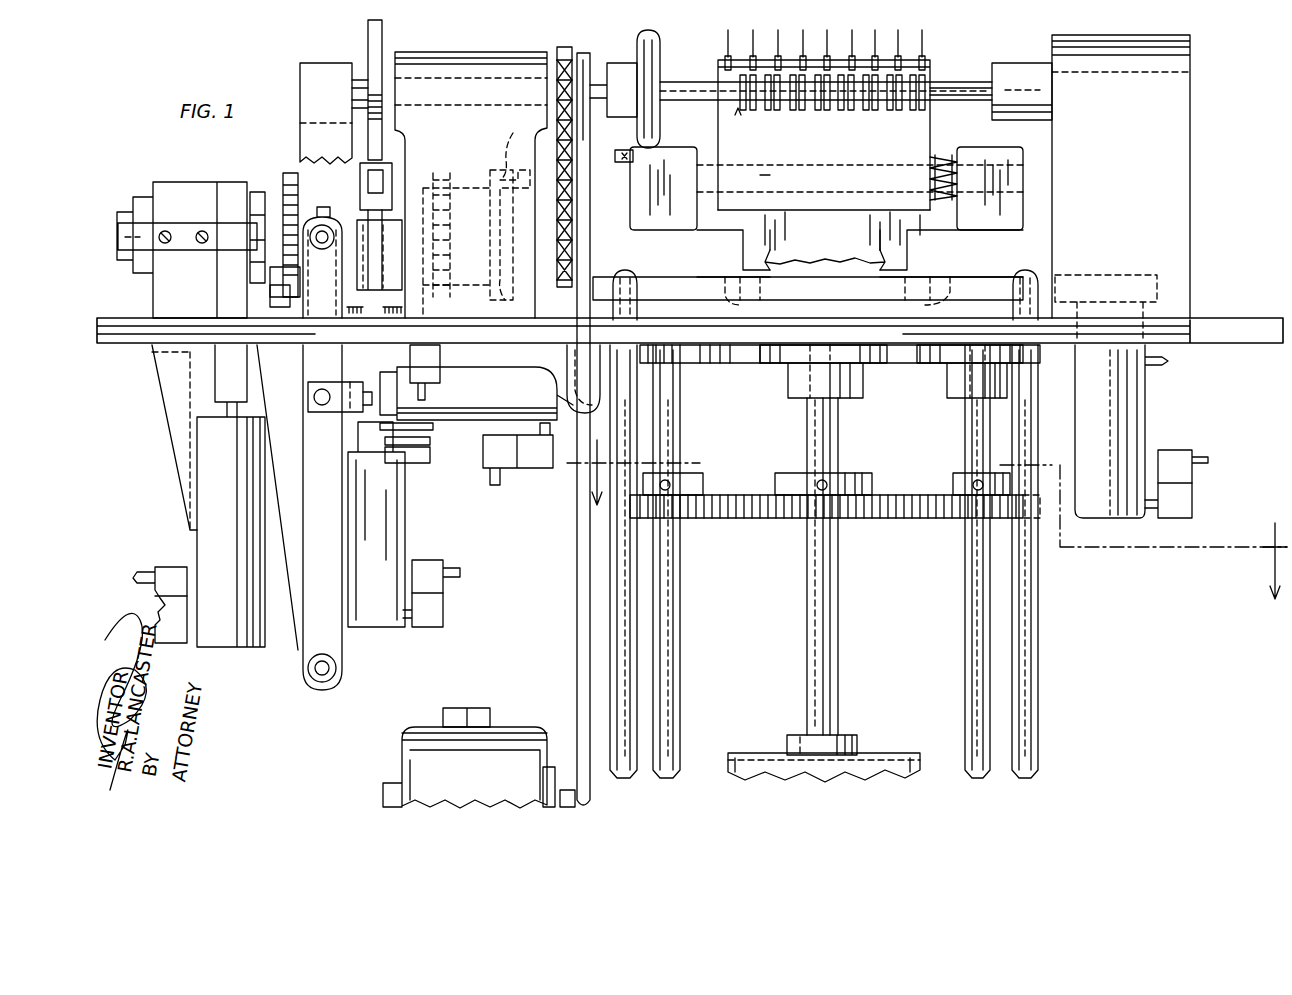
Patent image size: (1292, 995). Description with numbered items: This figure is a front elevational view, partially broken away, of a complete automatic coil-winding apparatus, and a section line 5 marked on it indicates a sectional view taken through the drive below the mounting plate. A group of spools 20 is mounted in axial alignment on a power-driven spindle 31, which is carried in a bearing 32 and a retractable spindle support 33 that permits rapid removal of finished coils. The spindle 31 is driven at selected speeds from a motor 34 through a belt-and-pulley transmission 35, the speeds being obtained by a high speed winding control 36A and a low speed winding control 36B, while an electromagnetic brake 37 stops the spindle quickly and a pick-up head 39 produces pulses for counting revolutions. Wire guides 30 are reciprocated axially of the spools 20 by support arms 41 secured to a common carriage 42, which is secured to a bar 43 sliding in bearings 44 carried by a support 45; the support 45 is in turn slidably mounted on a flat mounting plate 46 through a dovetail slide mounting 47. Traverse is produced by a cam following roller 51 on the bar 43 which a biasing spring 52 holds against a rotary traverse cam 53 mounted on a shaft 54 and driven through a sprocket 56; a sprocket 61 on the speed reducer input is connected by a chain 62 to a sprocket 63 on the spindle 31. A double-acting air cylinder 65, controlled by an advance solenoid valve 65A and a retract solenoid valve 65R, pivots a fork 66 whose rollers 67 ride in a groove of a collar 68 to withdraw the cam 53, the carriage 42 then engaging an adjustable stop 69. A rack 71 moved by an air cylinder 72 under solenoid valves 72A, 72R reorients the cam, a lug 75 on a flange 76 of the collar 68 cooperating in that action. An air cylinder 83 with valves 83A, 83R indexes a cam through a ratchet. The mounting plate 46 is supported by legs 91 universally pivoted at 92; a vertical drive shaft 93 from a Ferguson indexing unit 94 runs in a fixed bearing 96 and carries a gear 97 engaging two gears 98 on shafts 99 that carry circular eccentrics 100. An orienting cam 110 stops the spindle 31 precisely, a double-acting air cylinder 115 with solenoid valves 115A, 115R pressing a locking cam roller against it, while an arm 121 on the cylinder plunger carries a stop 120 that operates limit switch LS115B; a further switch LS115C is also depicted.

The section line 5- 5 is at (927, 508).
The spools 20 is at (735, 124).
The wire guides 30 is at (930, 58).
The spindle 31 is at (690, 90).
The bearing 32 is at (462, 58).
The retractable spindle support 33 is at (1012, 63).
The motor 34 is at (402, 758).
The belt-and-pulley transmission 35 is at (580, 268).
The high speed winding control 36A is at (458, 708).
The low speed winding control 36B is at (480, 708).
The electromagnetic brake 37 is at (552, 767).
The pick-up head 39 is at (323, 68).
The support arms 41 is at (660, 52).
The carriage 42 is at (767, 148).
The bar 43 is at (811, 168).
The bearings 44 is at (665, 150).
The support 45 is at (972, 222).
The mounting plate 46 is at (728, 275).
The dovetail slide mounting 47 is at (818, 262).
The cam following roller 51 is at (515, 207).
The biasing spring 52 is at (940, 157).
The traverse cam 53 is at (490, 300).
The shaft 54 is at (265, 200).
The sprocket 56 is at (470, 238).
The sprocket 61 is at (610, 278).
The chain 62 is at (588, 147).
The sprocket 63 is at (565, 47).
The double-acting air cylinder 65 is at (476, 393).
The advance solenoid valve 65A is at (503, 470).
The retract solenoid valve 65R is at (538, 470).
The fork 66 is at (337, 517).
The rollers 67 is at (313, 212).
The collar 68 is at (298, 185).
The stop 69 is at (660, 165).
The rack 71 is at (228, 182).
The double acting air cylinder 72 is at (215, 650).
The solenoid valve 72A is at (175, 587).
The solenoid valve 72R is at (178, 612).
The lug 75 is at (290, 300).
The flange 76 is at (270, 272).
The double-acting air cylinder 83 is at (1145, 413).
The advance valve 83A is at (1172, 455).
The retract valve 83R is at (1176, 498).
The legs 91 is at (637, 700).
The universal pivots 92 is at (1028, 275).
The vertical drive shaft 93 is at (845, 608).
The Ferguson indexing unit 94 is at (740, 757).
The fixed bearing 96 is at (788, 390).
The gear 97 is at (778, 520).
The gears 98 is at (693, 512).
The shafts 99 is at (690, 613).
The circular eccentrics 100 is at (837, 301).
The orienting cam 110 is at (382, 38).
The double-acting air cylinder 115 is at (388, 525).
The advance solenoid valve 115A is at (443, 585).
The solenoid valve 115R is at (443, 612).
The adjustable stop 120 is at (420, 433).
The arm 121 is at (418, 462).
The limit switch LS115B is at (440, 357).
The limit switch LS115C is at (420, 488).